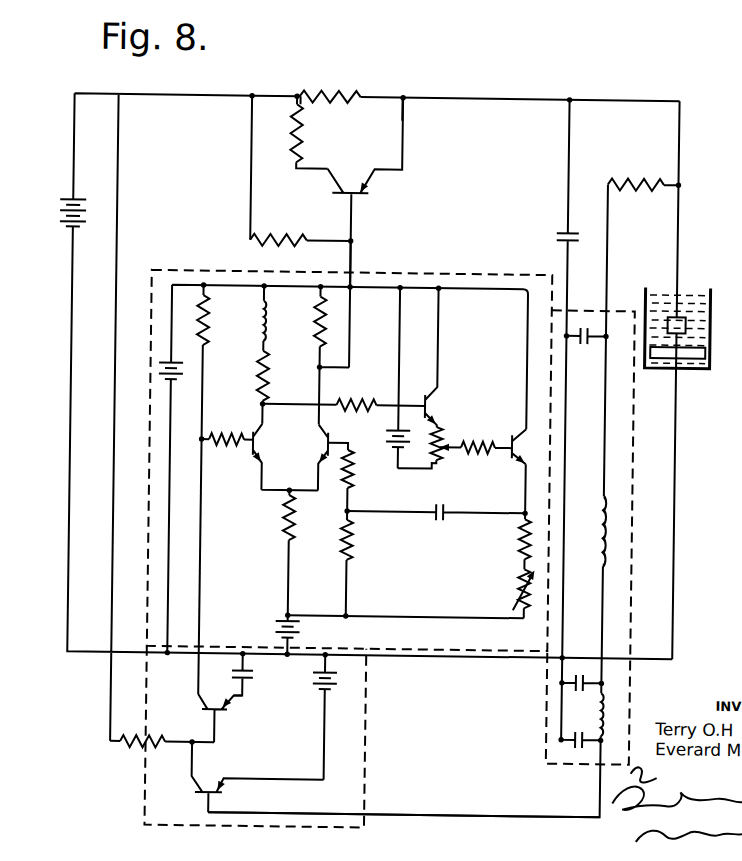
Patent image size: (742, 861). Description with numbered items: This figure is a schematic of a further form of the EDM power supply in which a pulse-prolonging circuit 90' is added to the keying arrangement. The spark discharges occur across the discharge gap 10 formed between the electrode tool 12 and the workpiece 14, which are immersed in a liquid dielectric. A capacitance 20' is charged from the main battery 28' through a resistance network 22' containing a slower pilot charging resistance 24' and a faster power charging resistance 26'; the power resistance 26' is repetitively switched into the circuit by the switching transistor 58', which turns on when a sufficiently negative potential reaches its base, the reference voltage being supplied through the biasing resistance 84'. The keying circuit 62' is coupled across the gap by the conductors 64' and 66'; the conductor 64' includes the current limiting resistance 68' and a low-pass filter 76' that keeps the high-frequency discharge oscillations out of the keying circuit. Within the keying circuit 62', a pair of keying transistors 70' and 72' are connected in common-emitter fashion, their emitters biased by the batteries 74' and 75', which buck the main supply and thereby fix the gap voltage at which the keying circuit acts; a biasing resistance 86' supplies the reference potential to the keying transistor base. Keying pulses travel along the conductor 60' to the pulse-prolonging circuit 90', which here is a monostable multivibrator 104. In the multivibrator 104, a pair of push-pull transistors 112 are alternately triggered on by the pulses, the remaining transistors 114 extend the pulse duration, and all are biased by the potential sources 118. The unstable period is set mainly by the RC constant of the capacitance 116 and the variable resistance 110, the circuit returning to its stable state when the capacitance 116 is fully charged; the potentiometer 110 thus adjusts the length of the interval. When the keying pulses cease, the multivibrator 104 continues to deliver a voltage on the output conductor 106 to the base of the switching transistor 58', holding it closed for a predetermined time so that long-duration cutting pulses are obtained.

The discharge gap 10 is at (700, 334).
The electrode tool 12 is at (686, 318).
The workpiece 14 is at (705, 349).
The capacitance 20' is at (543, 378).
The resistance network 22' is at (373, 116).
The pilot charging resistance 24' is at (339, 82).
The power charging resistance 26' is at (293, 140).
The battery 28' is at (49, 213).
The switching transistor 58' is at (364, 192).
The base conductor 60' is at (223, 567).
The keying circuit 62' is at (278, 737).
The conductor 64' is at (404, 797).
The conductor 66' is at (265, 670).
The current limiting resistance 68' is at (643, 321).
The keying transistor 70' is at (220, 704).
The keying transistor 72' is at (257, 778).
The battery 74' is at (336, 718).
The battery 75' is at (260, 703).
The low-pass filter 76' is at (440, 562).
The biasing resistance 84' is at (302, 171).
The biasing resistance 86' is at (155, 759).
The pulse-prolonging circuit 90' is at (350, 443).
The monostable multivibrator circuit 104 is at (503, 347).
The output conductor 106 is at (351, 260).
The variable resistance 110 is at (445, 458).
The push-pull transistors 112 is at (318, 440).
The transistors 114 is at (508, 438).
The capacitance 116 is at (444, 520).
The potential sources 118 is at (185, 377).